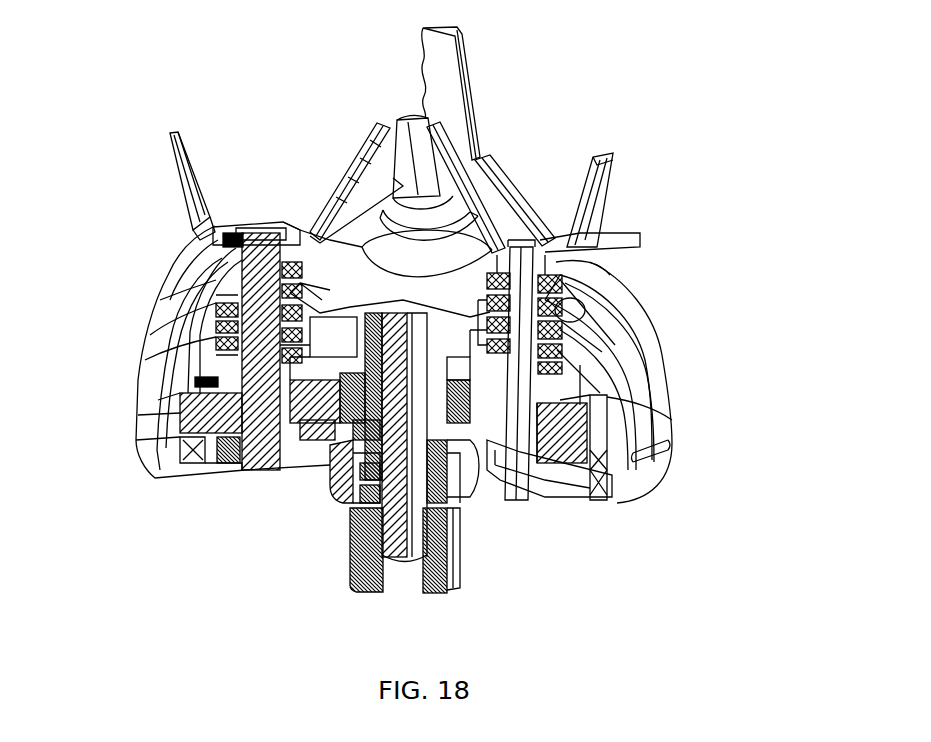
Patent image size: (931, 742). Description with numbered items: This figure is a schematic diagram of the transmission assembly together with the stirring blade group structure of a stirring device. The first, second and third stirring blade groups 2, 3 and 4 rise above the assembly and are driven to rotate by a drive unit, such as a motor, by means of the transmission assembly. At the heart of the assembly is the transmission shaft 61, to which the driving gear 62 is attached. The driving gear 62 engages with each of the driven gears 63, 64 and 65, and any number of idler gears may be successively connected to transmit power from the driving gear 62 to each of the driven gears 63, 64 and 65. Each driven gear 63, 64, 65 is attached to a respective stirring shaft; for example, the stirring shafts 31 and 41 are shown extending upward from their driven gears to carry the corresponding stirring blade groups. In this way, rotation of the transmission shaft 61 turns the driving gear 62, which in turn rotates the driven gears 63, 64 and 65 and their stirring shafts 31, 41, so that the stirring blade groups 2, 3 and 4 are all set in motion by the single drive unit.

The first stirring blade group 2 is at (173, 173).
The second stirring blade group 3 is at (482, 100).
The third stirring blade group 4 is at (612, 205).
The stirring shaft 31 is at (285, 322).
The stirring shaft 41 is at (470, 316).
The transmission shaft 61 is at (445, 568).
The driving gear 62 is at (487, 487).
The driven gear 63 is at (240, 473).
The driven gear 64 is at (600, 393).
The driven gear 65 is at (613, 497).